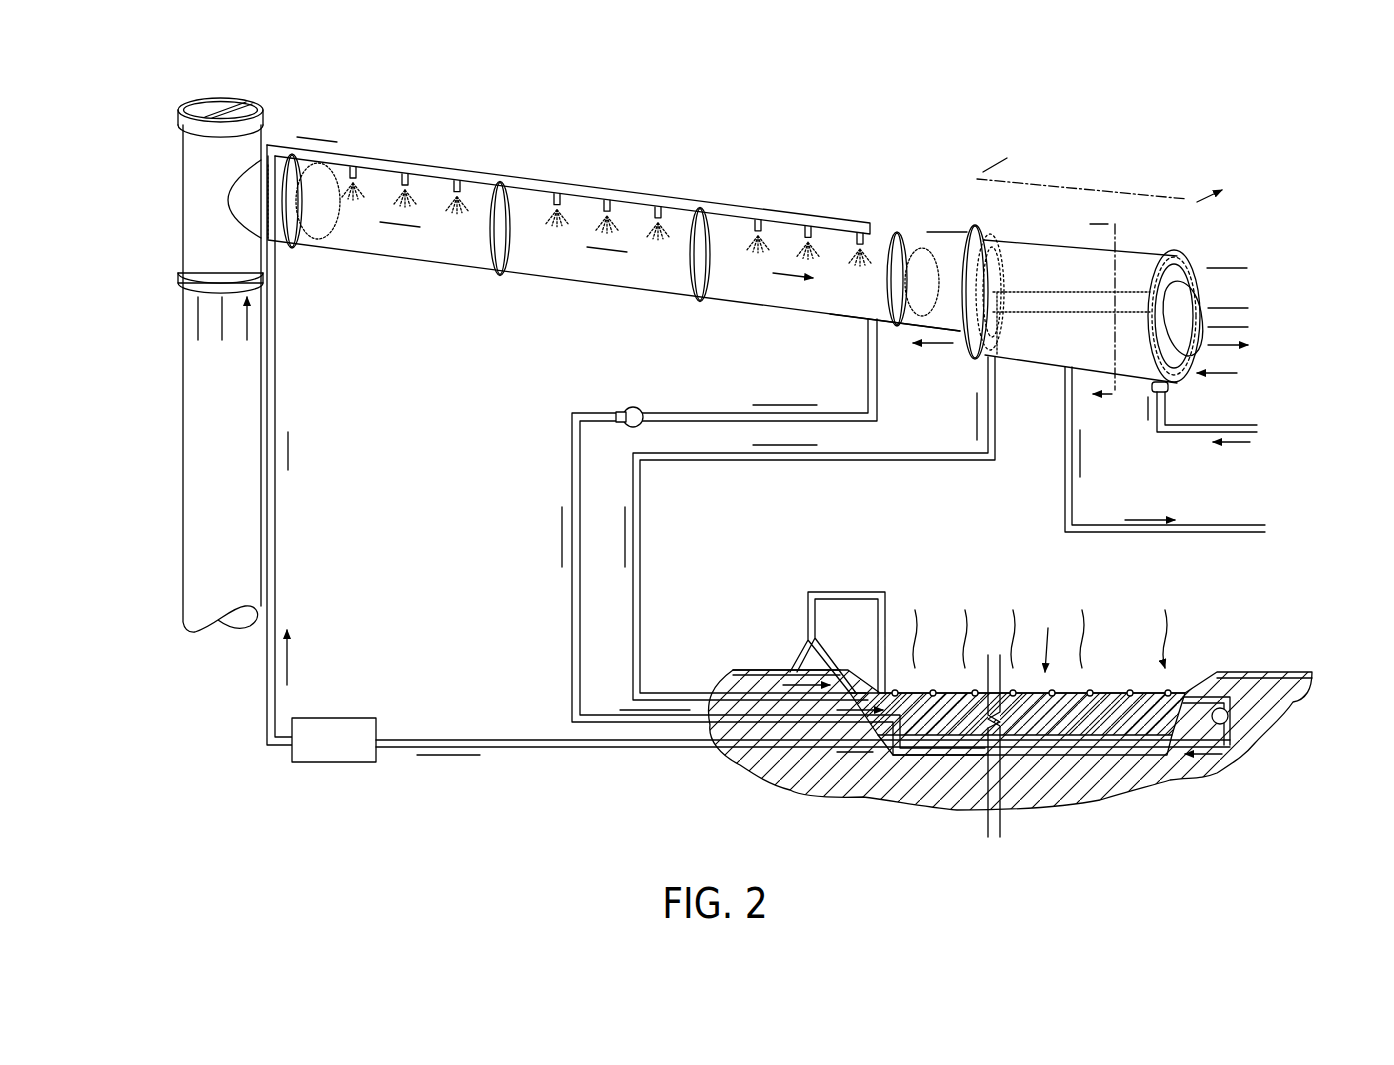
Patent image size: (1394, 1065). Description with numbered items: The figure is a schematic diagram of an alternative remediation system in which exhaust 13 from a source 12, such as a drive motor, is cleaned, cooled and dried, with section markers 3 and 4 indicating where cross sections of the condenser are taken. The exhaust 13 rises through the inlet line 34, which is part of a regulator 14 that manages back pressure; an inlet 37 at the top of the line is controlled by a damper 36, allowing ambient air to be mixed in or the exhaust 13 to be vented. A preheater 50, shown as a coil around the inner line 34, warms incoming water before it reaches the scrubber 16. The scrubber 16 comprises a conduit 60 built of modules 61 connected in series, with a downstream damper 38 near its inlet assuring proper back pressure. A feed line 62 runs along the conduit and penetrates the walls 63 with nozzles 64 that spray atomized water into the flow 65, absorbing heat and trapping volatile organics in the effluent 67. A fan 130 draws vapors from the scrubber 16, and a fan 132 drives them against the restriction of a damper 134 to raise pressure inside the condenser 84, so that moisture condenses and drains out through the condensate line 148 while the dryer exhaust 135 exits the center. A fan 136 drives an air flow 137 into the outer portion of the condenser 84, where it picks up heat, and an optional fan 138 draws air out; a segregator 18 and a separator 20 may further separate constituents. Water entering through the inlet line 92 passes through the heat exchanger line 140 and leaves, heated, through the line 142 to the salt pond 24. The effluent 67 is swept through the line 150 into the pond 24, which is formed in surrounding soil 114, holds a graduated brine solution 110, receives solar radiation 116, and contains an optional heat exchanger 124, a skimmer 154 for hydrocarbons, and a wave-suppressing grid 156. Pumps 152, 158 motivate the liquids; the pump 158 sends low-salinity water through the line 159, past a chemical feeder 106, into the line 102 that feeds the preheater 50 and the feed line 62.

The source 12 is at (205, 447).
The exhaust 13 is at (196, 326).
The regulator 14 is at (155, 150).
The scrubber 16 is at (530, 125).
The segregator 18 is at (1085, 178).
The separator 20 is at (1295, 330).
The salt pond 24 is at (1047, 634).
The inlet line 34 is at (182, 240).
The damper 36 is at (233, 102).
The inlet 37 is at (196, 108).
The downstream damper 38 is at (318, 218).
The preheater 50 is at (262, 197).
The conduit 60 is at (532, 254).
The module 61 is at (416, 252).
The feed line 62 is at (390, 152).
The wall 63 is at (459, 180).
The nozzle 64 is at (410, 190).
The flow 65 is at (605, 250).
The effluent 67 is at (838, 305).
The condenser 84 is at (1172, 190).
The inlet line 92 is at (1180, 440).
The line 102 is at (275, 520).
The chemical feeder 106 is at (350, 718).
The solution 110 is at (1125, 710).
The soil 114 is at (1180, 775).
The solar radiation 116 is at (1007, 620).
The heat exchanger 124 is at (1040, 752).
The fan 130 is at (918, 257).
The fan 132 is at (993, 265).
The damper 134 is at (1195, 342).
The exhaust 135 is at (1232, 305).
The fan 136 is at (1170, 388).
The air flow 137 is at (1235, 385).
The fan 138 is at (984, 238).
The line 140 is at (1075, 300).
The line 142 is at (642, 492).
The condensate line 148 is at (1180, 537).
The line 150 is at (878, 365).
The pump 152 is at (640, 410).
The skimmer 154 is at (858, 590).
The grid 156 is at (1182, 695).
The pump 158 is at (1230, 717).
The line 159 is at (452, 738).
The section line 3 is at (1093, 183).
The section line 4 is at (1102, 309).